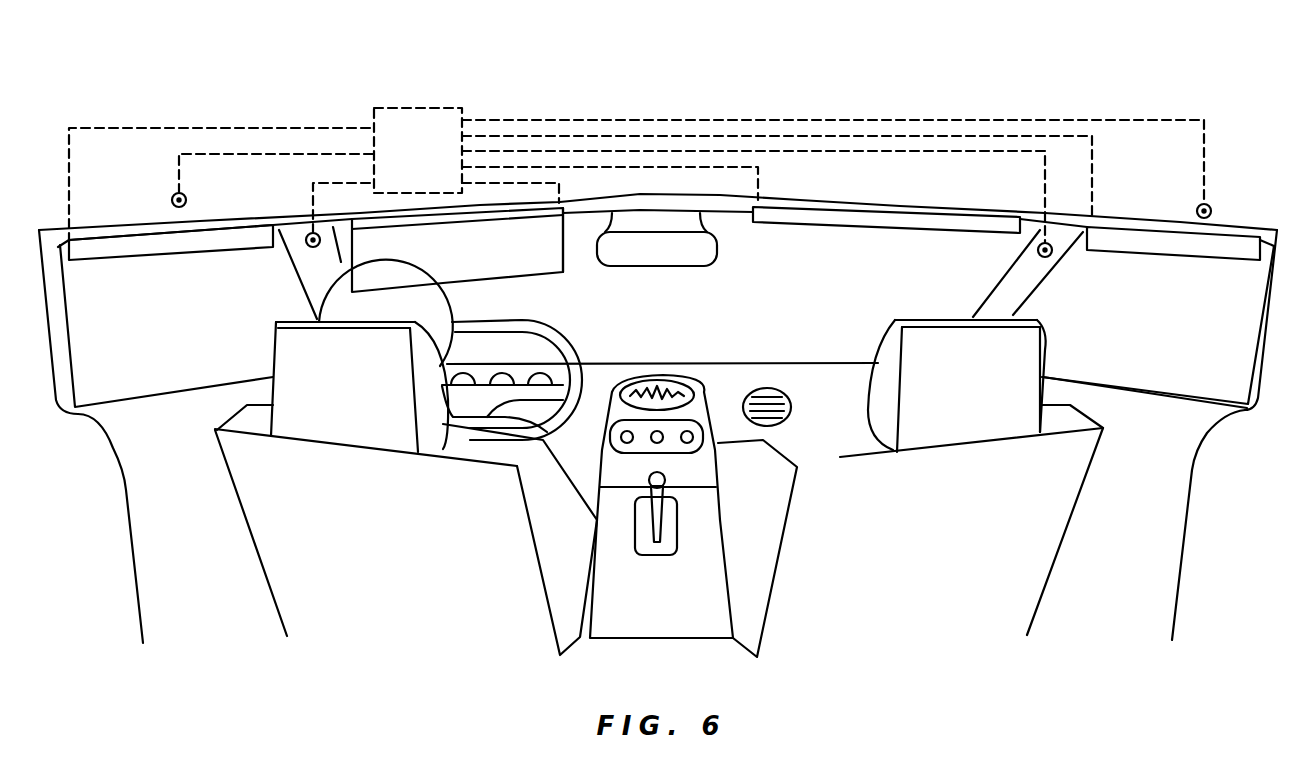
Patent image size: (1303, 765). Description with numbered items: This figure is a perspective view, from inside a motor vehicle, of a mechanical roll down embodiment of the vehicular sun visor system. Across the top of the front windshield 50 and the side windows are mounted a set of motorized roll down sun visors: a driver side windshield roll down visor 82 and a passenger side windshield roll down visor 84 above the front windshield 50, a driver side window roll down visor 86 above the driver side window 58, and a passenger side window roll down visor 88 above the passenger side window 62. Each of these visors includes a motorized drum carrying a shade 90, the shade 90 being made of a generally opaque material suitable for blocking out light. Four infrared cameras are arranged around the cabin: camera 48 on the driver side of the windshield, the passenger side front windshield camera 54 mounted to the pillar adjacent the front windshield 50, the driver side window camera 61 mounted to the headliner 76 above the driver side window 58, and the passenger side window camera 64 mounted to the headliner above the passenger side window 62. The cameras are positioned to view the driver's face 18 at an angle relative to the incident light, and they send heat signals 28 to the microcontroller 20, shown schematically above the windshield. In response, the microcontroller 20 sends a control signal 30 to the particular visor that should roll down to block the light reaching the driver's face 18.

The driver's face 18 is at (458, 308).
The microcontroller 20 is at (430, 122).
The heat signals 28 is at (310, 197).
The control signal 30 is at (263, 125).
The infrared camera 48 is at (307, 247).
The front windshield 50 is at (845, 363).
The passenger side front windshield camera 54 is at (1050, 258).
The driver side window 58 is at (130, 385).
The driver side window camera 61 is at (172, 199).
The passenger side window 62 is at (1212, 390).
The passenger side window camera 64 is at (1213, 208).
The headliner 76 is at (742, 208).
The driver side windshield roll down visor 82 is at (565, 218).
The passenger side windshield roll down visor 84 is at (920, 222).
The driver side window roll down visor 86 is at (212, 244).
The passenger side window roll down visor 88 is at (1188, 248).
The shade 90 is at (538, 272).